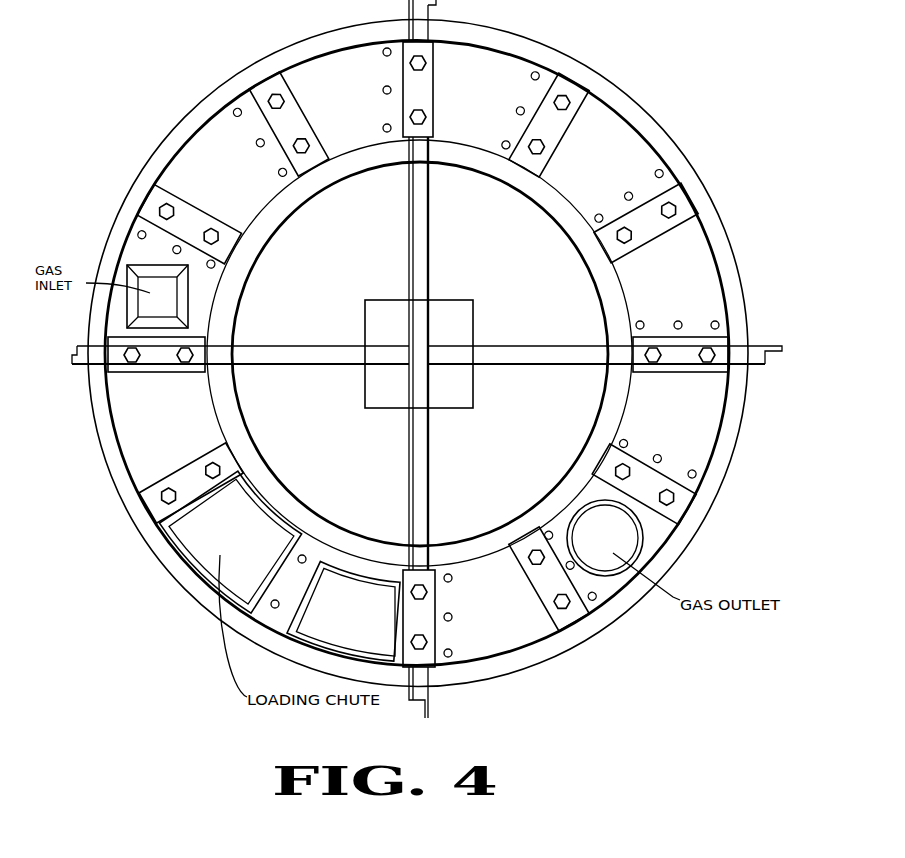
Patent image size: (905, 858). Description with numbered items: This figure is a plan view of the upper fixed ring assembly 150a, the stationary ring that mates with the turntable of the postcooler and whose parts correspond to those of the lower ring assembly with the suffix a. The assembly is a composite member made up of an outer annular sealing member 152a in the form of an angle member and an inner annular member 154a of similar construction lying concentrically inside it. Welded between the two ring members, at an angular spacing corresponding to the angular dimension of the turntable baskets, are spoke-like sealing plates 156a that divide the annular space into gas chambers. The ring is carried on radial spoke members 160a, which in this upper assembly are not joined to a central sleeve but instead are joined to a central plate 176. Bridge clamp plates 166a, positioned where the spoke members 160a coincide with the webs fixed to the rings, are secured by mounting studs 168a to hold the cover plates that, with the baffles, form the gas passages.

The upper fixed ring assembly 150a is at (258, 50).
The outer annular sealing member 152a is at (647, 122).
The inner annular member 154a is at (485, 158).
The spoke-like sealing plates 156a is at (465, 116).
The upper spokes 160a is at (417, 263).
The bridge clamp plates 166a is at (283, 128).
The mounting studs 168a is at (410, 115).
The plate 176 is at (448, 317).